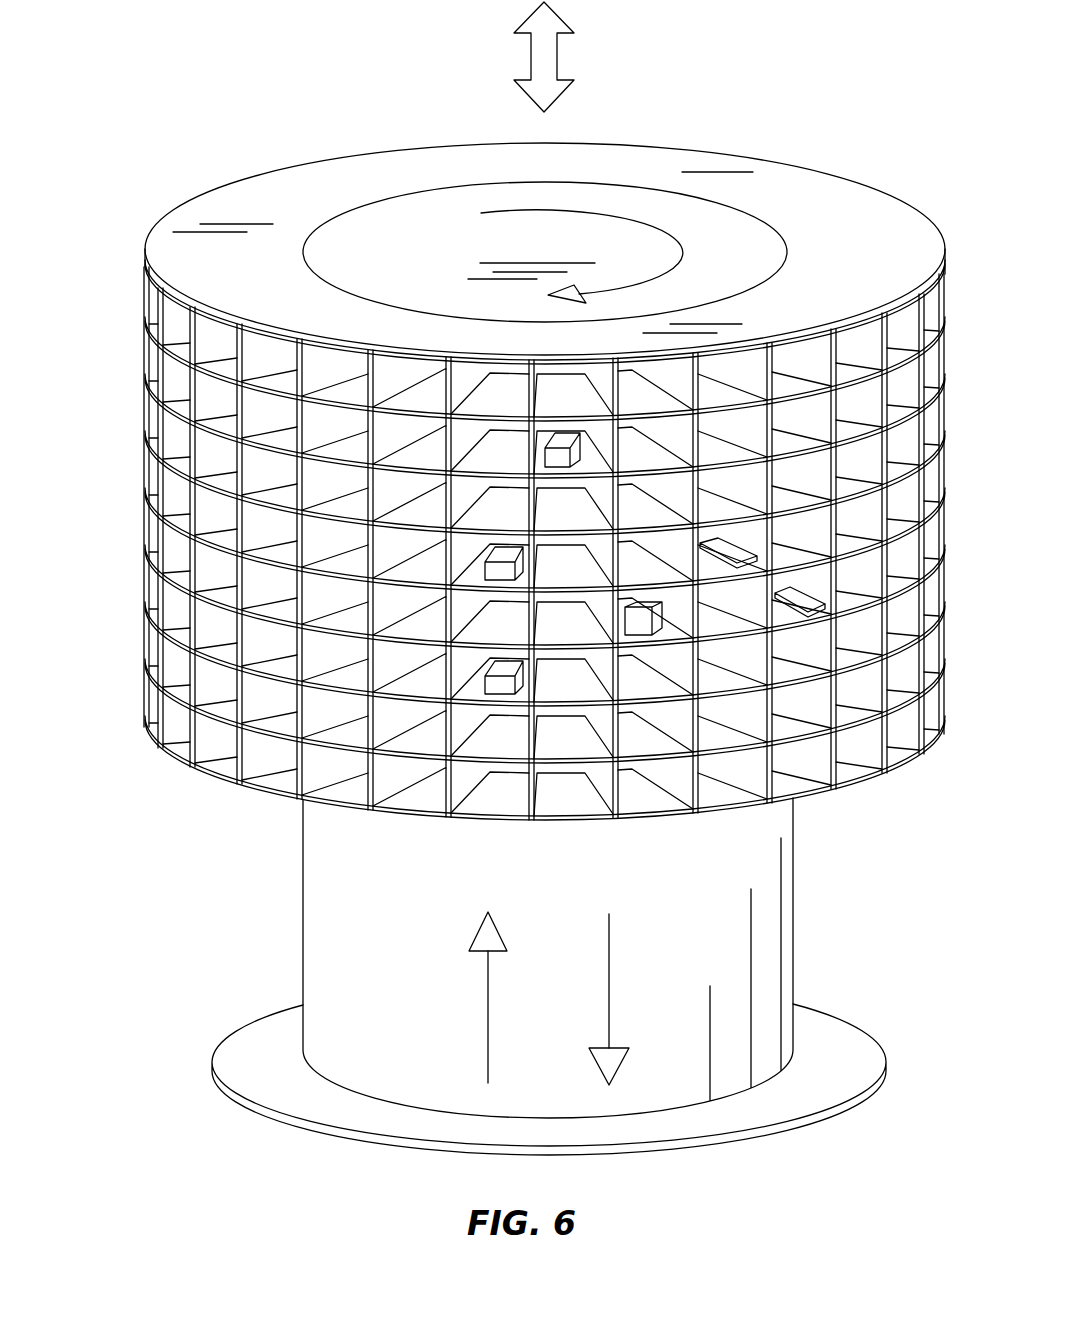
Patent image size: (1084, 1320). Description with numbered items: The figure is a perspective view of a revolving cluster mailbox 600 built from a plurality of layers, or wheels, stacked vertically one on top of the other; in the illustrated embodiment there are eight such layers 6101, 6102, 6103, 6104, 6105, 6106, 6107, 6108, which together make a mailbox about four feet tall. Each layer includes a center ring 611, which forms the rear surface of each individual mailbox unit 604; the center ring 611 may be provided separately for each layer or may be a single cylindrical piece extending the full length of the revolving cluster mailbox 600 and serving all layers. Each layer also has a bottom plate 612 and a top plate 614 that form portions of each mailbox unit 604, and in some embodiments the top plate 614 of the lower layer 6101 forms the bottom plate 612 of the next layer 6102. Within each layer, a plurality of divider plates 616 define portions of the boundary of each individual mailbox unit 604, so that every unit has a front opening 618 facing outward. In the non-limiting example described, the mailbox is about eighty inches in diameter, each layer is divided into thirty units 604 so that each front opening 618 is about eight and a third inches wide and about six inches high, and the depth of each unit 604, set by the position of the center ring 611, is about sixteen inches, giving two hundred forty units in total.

The revolving cluster mailbox 600 is at (250, 145).
The individual mailbox unit 604 is at (562, 811).
The first layer 6101 is at (493, 711).
The second layer 6102 is at (493, 654).
The third layer 6103 is at (493, 597).
The fourth layer 6104 is at (493, 540).
The fifth layer 6105 is at (493, 483).
The sixth layer 6106 is at (493, 426).
The seventh layer 6107 is at (493, 369).
The eighth layer 6108 is at (140, 293).
The center ring 611 is at (575, 780).
The bottom plate 612 is at (284, 797).
The top plate 614 is at (230, 780).
The divider plate 616 is at (630, 383).
The front opening 618 is at (428, 795).